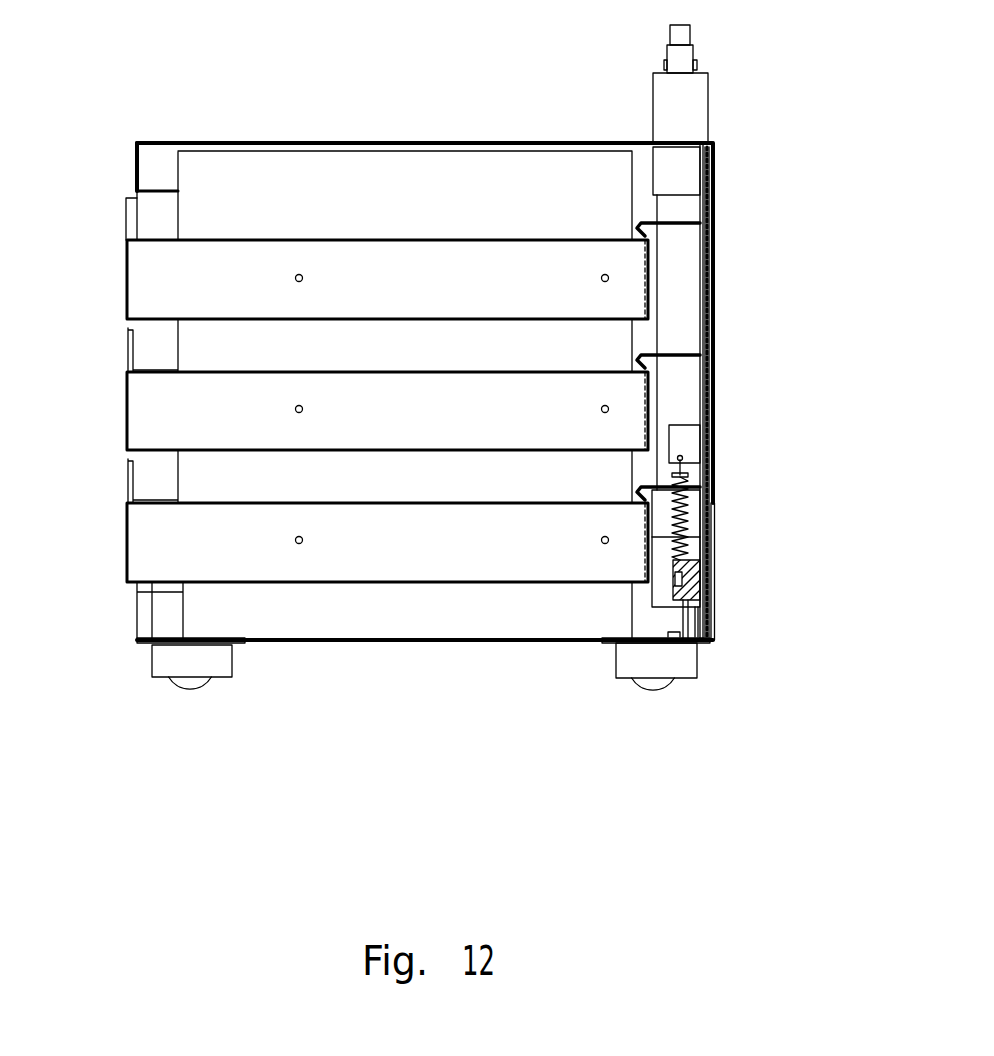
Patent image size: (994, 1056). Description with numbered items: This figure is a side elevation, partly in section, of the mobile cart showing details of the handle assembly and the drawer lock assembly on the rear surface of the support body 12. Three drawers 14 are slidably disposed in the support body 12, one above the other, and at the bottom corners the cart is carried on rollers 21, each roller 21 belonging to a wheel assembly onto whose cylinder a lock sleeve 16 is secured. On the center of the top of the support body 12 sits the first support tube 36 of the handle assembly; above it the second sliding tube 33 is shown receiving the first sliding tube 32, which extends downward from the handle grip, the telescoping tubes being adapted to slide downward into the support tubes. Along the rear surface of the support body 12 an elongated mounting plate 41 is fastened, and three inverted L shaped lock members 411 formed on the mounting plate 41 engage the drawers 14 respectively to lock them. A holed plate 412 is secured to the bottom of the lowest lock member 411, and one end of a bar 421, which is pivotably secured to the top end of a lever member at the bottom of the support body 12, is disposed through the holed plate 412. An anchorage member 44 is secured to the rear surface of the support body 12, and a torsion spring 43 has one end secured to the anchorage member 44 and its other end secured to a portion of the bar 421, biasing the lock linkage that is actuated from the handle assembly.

The support body 12 is at (327, 173).
The drawer 14 is at (152, 283).
The lock sleeve 16 is at (182, 667).
The roller 21 is at (192, 685).
The first sliding tube 32 is at (677, 34).
The second sliding tube 33 is at (680, 62).
The first support tube 36 is at (688, 95).
The mounting plate 41 is at (715, 322).
The lock member 411 is at (688, 226).
The holed plate 412 is at (702, 575).
The bar 421 is at (672, 587).
The torsion spring 43 is at (690, 510).
The anchorage member 44 is at (690, 448).